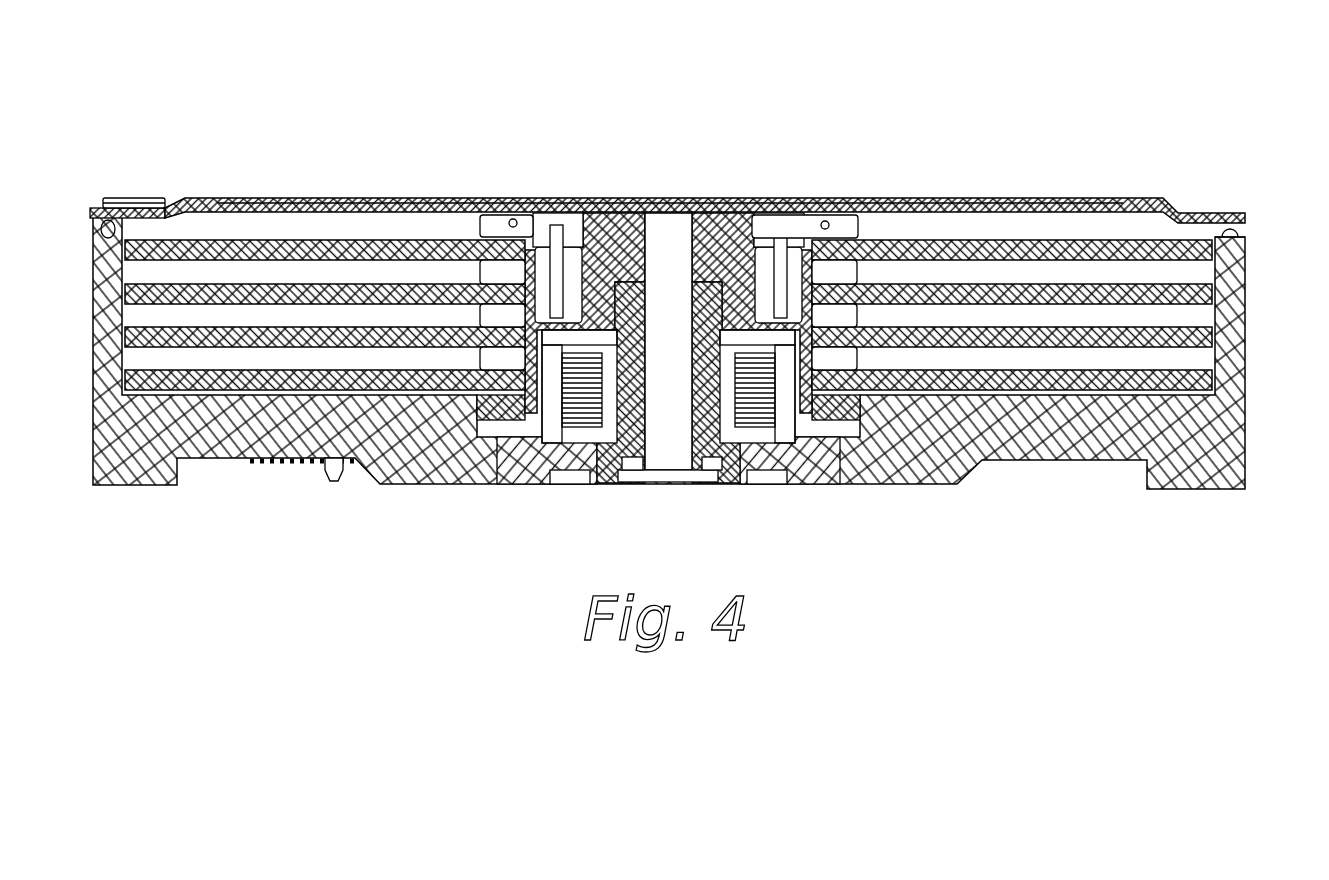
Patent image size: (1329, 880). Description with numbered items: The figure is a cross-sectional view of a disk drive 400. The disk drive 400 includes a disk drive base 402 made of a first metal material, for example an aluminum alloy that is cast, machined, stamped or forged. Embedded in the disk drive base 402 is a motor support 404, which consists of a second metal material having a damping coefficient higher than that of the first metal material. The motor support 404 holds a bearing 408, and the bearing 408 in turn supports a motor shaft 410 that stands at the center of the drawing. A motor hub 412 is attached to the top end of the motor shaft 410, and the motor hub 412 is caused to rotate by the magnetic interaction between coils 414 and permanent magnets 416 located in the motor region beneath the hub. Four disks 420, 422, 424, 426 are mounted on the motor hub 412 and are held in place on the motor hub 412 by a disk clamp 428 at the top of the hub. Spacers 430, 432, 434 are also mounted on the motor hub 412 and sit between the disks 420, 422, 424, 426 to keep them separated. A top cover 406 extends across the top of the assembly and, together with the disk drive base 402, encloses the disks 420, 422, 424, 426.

The disk drive 400 is at (820, 112).
The disk drive base 402 is at (223, 448).
The motor support 404 is at (480, 477).
The top cover 406 is at (1147, 202).
The bearing 408 is at (633, 435).
The motor shaft 410 is at (662, 222).
The motor hub 412 is at (612, 222).
The coils 414 is at (758, 433).
The permanent magnets 416 is at (555, 417).
The disk 420 is at (1212, 250).
The disk 422 is at (1212, 296).
The disk 424 is at (1212, 341).
The disk 426 is at (1212, 383).
The disk clamp 428 is at (497, 218).
The spacer 430 is at (850, 270).
The spacer 432 is at (848, 317).
The spacer 434 is at (852, 362).